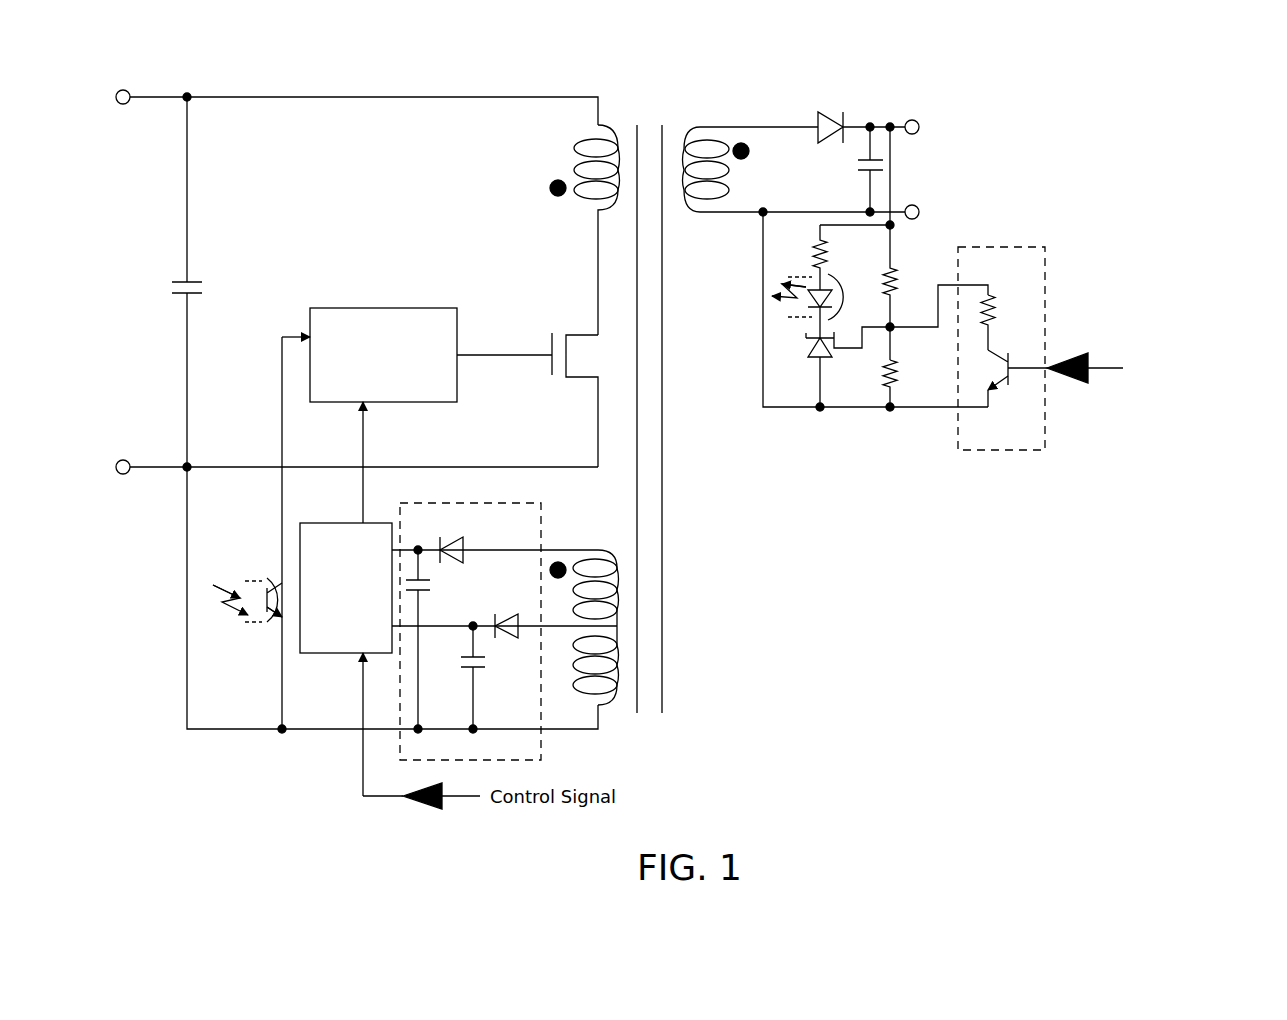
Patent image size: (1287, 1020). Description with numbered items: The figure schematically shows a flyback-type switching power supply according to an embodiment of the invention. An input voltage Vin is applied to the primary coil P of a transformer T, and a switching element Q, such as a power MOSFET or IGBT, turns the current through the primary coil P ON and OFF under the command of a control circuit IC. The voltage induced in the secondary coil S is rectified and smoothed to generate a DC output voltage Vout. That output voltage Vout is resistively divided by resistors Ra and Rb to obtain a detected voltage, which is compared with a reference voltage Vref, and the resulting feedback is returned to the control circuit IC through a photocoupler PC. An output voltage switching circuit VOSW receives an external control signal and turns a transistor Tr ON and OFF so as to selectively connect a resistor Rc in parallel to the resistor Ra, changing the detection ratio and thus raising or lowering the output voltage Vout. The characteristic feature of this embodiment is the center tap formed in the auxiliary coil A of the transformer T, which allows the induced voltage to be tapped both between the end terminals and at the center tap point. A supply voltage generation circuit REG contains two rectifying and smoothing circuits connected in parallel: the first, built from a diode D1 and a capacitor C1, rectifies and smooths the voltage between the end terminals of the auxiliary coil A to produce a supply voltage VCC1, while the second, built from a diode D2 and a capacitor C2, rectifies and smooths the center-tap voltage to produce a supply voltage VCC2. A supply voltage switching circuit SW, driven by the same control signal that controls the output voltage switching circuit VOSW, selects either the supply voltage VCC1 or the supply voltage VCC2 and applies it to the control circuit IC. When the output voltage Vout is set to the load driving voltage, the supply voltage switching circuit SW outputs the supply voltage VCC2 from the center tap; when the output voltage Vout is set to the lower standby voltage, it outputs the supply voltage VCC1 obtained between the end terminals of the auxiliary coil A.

The input voltage Vin is at (352, 268).
The transformer T is at (722, 406).
The primary coil P is at (580, 230).
The secondary coil S is at (794, 169).
The auxiliary coil A is at (579, 612).
The switching element Q is at (527, 385).
The control circuit IC is at (383, 343).
The supply voltage switching circuit SW is at (322, 655).
The supply voltage generation circuit REG is at (525, 748).
The diode D1 is at (465, 537).
The diode D2 is at (514, 643).
The capacitor C1 is at (432, 639).
The capacitor C2 is at (482, 677).
The supply voltage VCC1 is at (419, 548).
The supply voltage VCC2 is at (473, 630).
The photocoupler PC is at (528, 423).
The output voltage Vout is at (944, 169).
The resistor Rb is at (905, 243).
The resistor Ra is at (904, 373).
The resistor Rc is at (1003, 322).
The reference voltage Vref is at (848, 367).
The switching element (transistor) Tr is at (1108, 391).
The output voltage switching circuit VOSW is at (978, 437).